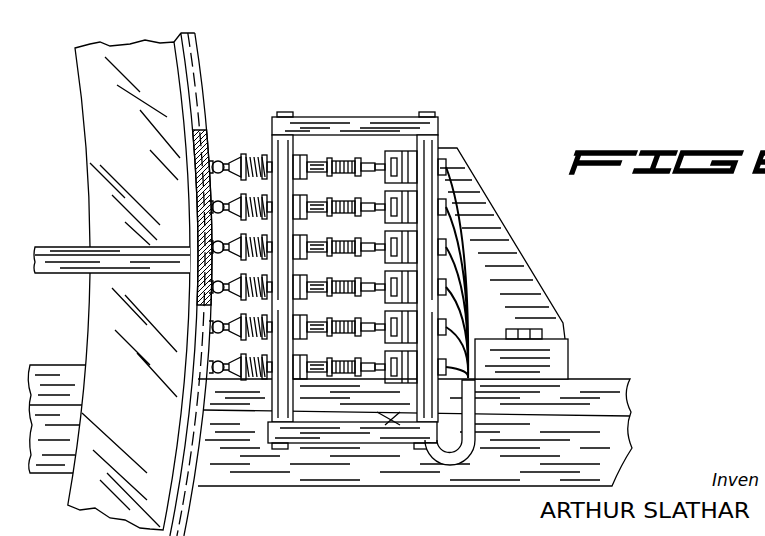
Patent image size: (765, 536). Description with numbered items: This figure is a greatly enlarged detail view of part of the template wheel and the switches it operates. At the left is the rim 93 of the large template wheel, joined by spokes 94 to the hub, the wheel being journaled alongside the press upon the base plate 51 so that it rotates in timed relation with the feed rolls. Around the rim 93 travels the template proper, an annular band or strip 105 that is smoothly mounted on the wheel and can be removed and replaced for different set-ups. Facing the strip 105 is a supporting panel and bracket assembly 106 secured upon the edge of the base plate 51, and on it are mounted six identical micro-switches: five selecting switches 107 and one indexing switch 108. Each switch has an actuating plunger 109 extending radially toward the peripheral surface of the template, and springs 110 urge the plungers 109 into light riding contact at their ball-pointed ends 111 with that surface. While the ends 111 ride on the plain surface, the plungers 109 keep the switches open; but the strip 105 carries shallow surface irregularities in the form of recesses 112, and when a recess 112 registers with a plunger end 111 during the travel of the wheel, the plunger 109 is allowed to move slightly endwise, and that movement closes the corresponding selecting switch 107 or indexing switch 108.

The base plate 51 is at (622, 378).
The rim 93 is at (90, 178).
The spokes 94 is at (78, 273).
The annular band or strip 105 is at (200, 278).
The supporting panel and bracket assembly 106 is at (357, 103).
The selecting switches 107 is at (312, 285).
The indexing switch 108 is at (387, 390).
The actuating plungers 109 is at (236, 154).
The springs 110 is at (253, 158).
The ball-pointed ends 111 is at (197, 185).
The recesses 112 is at (212, 246).